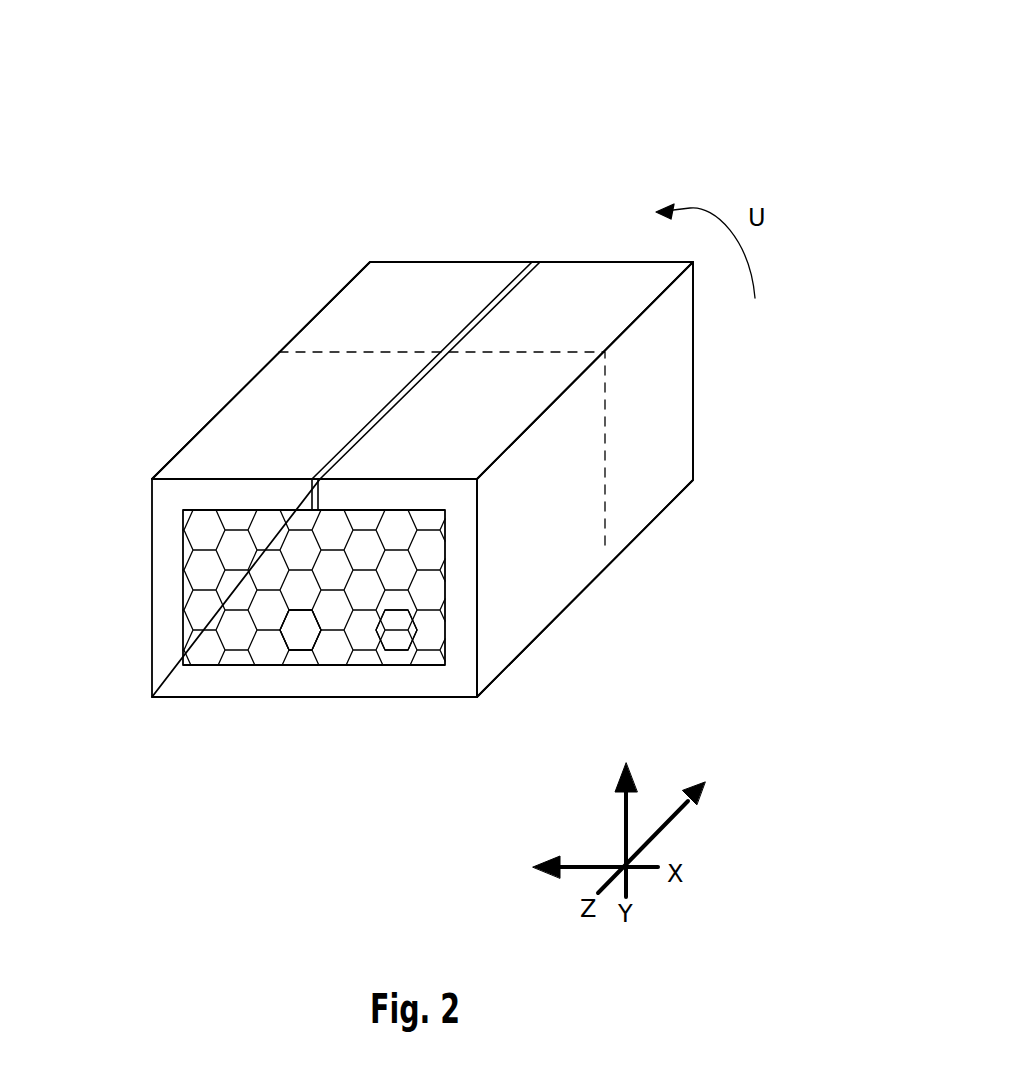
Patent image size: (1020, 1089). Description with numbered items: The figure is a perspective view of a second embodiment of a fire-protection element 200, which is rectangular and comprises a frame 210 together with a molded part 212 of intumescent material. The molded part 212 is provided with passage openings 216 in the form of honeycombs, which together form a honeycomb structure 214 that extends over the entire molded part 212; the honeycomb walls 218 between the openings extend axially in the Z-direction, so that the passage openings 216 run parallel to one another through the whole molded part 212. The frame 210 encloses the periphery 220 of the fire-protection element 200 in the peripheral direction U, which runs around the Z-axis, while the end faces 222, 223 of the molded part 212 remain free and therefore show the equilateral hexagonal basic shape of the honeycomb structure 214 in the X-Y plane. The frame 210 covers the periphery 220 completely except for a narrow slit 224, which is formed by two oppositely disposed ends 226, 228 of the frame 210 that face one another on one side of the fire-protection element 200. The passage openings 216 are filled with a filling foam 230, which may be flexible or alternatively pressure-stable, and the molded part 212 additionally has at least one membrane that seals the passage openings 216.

The fire-protection element 200 is at (138, 108).
The frame 210 is at (213, 497).
The molded part 212 is at (214, 667).
The honeycomb structure 214 is at (298, 652).
The passage openings 216 is at (407, 655).
The honeycomb walls 218 is at (317, 711).
The periphery 220 is at (605, 520).
The end face 222 is at (428, 598).
The end face 223 is at (698, 385).
The slit 224 is at (337, 452).
The frame end 226 is at (497, 285).
The frame end 228 is at (543, 290).
The filling foam 230 is at (440, 707).